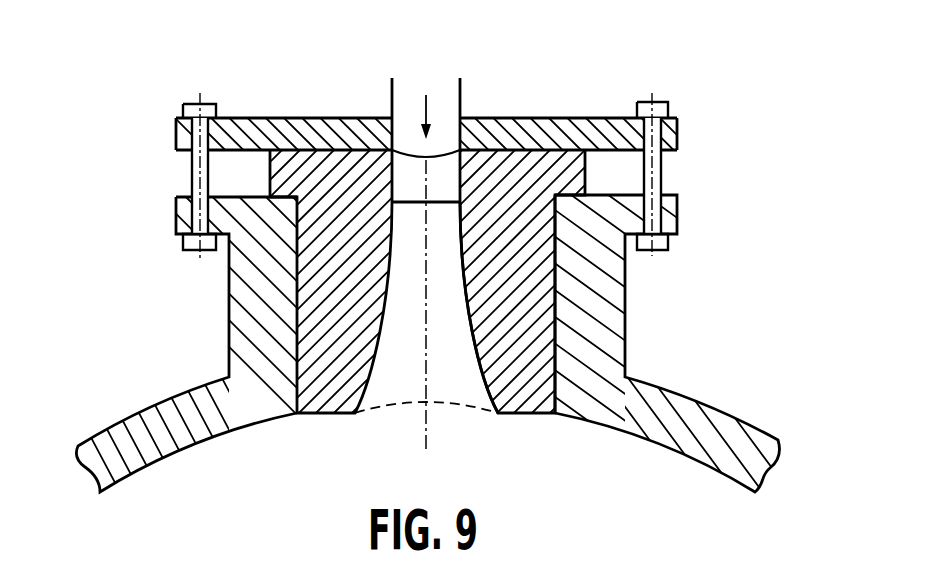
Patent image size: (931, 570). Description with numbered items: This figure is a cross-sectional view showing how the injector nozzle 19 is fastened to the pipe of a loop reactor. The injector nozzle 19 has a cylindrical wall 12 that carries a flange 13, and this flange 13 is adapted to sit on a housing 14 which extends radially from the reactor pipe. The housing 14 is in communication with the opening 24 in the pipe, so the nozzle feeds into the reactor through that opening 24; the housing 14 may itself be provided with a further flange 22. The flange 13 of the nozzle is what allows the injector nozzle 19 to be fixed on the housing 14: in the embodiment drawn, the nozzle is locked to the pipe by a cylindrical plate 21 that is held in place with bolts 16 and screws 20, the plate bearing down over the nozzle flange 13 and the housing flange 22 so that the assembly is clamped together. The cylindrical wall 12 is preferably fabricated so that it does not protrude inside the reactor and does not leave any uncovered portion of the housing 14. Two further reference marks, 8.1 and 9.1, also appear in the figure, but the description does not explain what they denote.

The flow passage / bore 8.1 is at (474, 361).
The supply tube 9.1 is at (468, 177).
The cylindrical wall 12 is at (320, 318).
The flange 13 is at (583, 178).
The housing 14 is at (610, 317).
The bolts 16 is at (660, 170).
The injector nozzle 19 is at (569, 146).
The screws 20 is at (664, 111).
The cylindrical plate 21 is at (176, 132).
The flange 22 is at (667, 213).
The opening 24 is at (555, 413).